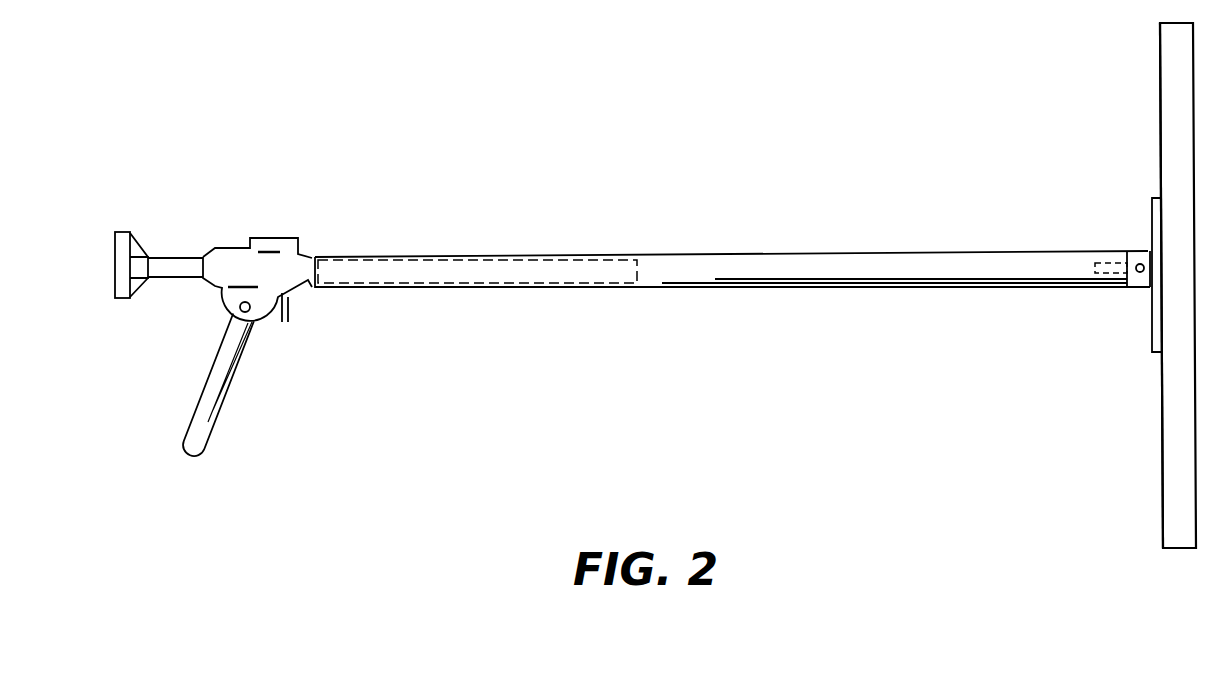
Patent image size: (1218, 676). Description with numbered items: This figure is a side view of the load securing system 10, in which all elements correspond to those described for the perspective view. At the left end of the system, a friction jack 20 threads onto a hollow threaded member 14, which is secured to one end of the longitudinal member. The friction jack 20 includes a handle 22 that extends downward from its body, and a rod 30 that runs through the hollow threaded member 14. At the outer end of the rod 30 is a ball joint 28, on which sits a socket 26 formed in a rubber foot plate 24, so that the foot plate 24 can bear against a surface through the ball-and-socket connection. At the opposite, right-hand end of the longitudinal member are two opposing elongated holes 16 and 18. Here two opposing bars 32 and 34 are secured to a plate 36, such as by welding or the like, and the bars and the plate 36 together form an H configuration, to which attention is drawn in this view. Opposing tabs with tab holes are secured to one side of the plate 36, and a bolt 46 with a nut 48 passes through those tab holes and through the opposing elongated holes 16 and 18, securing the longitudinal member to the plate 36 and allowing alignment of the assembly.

The load securing system 10 is at (552, 255).
The hollow threaded member 14 is at (403, 285).
The elongated hole 16 is at (1128, 277).
The elongated hole 18 is at (1108, 253).
The friction jack 20 is at (238, 250).
The handle 22 is at (233, 385).
The rubber foot plate 24 is at (119, 263).
The socket 26 is at (148, 278).
The ball joint 28 is at (138, 272).
The rod 30 is at (167, 258).
The bar 32 is at (1160, 103).
The bar 34 is at (1167, 153).
The plate 36 is at (1150, 222).
The bolt 46 is at (1137, 273).
The nut 48 is at (1132, 253).